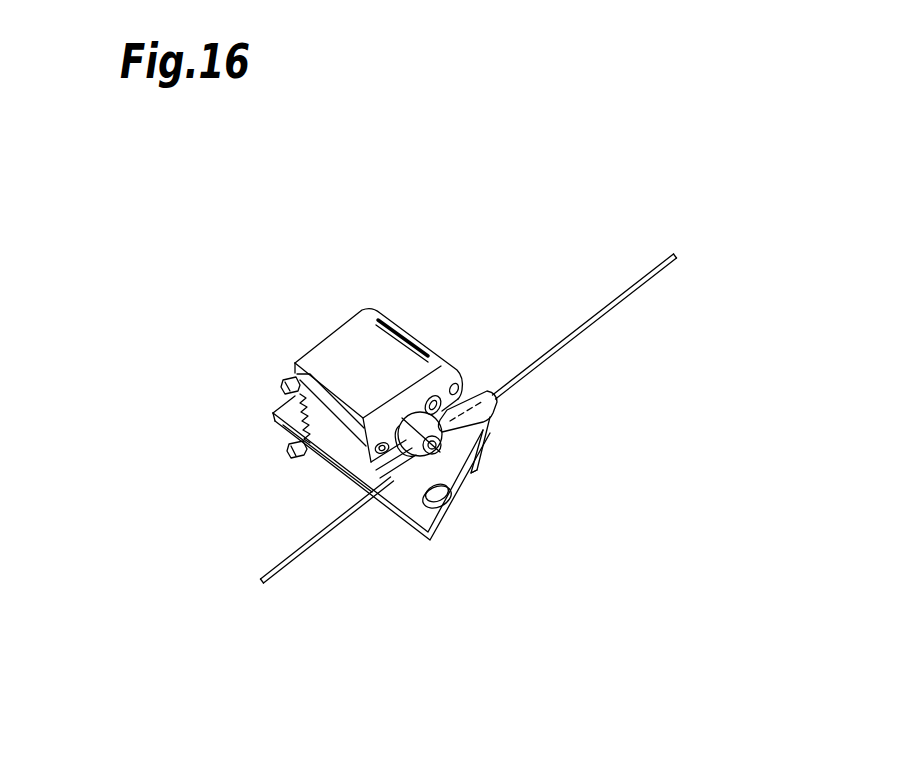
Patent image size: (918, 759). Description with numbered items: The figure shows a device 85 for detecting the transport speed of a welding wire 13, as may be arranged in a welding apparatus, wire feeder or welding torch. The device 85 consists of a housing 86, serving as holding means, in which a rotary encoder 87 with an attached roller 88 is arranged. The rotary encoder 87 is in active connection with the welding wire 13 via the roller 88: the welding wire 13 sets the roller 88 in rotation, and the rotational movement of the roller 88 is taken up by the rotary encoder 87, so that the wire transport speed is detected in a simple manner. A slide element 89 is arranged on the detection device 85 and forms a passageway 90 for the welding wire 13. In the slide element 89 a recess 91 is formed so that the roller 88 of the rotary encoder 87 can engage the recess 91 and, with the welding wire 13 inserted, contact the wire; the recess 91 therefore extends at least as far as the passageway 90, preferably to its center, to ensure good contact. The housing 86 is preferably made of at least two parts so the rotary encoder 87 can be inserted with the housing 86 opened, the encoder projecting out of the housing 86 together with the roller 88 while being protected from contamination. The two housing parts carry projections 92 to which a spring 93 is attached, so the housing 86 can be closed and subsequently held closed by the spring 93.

The welding wire 13 is at (277, 560).
The device 85 is at (442, 306).
The housing 86 is at (363, 355).
The rotary encoder 87 is at (401, 405).
The roller 88 is at (436, 451).
The slide element 89 is at (373, 470).
The passageway 90 is at (498, 417).
The recess 91 is at (442, 462).
The projections 92 is at (293, 383).
The spring 93 is at (273, 417).